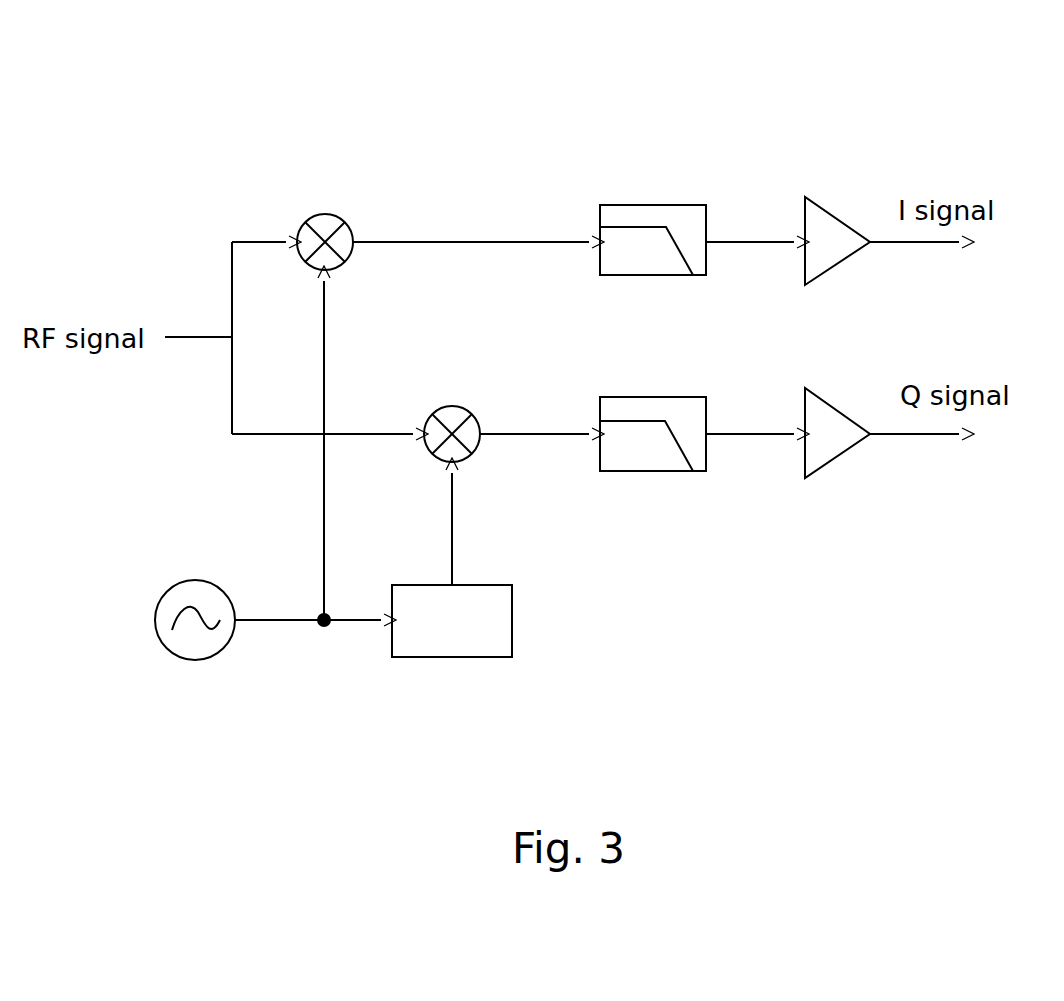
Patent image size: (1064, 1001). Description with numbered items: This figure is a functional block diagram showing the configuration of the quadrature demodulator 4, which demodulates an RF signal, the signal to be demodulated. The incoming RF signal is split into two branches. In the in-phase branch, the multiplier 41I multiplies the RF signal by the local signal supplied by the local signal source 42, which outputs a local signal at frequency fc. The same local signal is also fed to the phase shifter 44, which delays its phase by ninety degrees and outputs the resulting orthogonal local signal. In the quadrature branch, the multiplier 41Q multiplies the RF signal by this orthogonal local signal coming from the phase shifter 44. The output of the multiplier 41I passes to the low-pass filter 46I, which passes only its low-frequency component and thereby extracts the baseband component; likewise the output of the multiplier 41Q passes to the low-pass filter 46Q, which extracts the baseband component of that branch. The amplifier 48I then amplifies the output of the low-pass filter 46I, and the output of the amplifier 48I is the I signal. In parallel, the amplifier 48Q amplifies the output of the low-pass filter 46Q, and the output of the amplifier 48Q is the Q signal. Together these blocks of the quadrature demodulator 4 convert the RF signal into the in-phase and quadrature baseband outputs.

The quadrature demodulator 4 is at (968, 88).
The multiplier 41I is at (343, 218).
The multiplier 41Q is at (460, 407).
The local signal source 42 is at (190, 578).
The phase shifter 44 is at (493, 583).
The low-pass filter 46I is at (650, 204).
The low-pass filter 46Q is at (650, 396).
The amplifier 48I is at (835, 215).
The amplifier 48Q is at (838, 410).